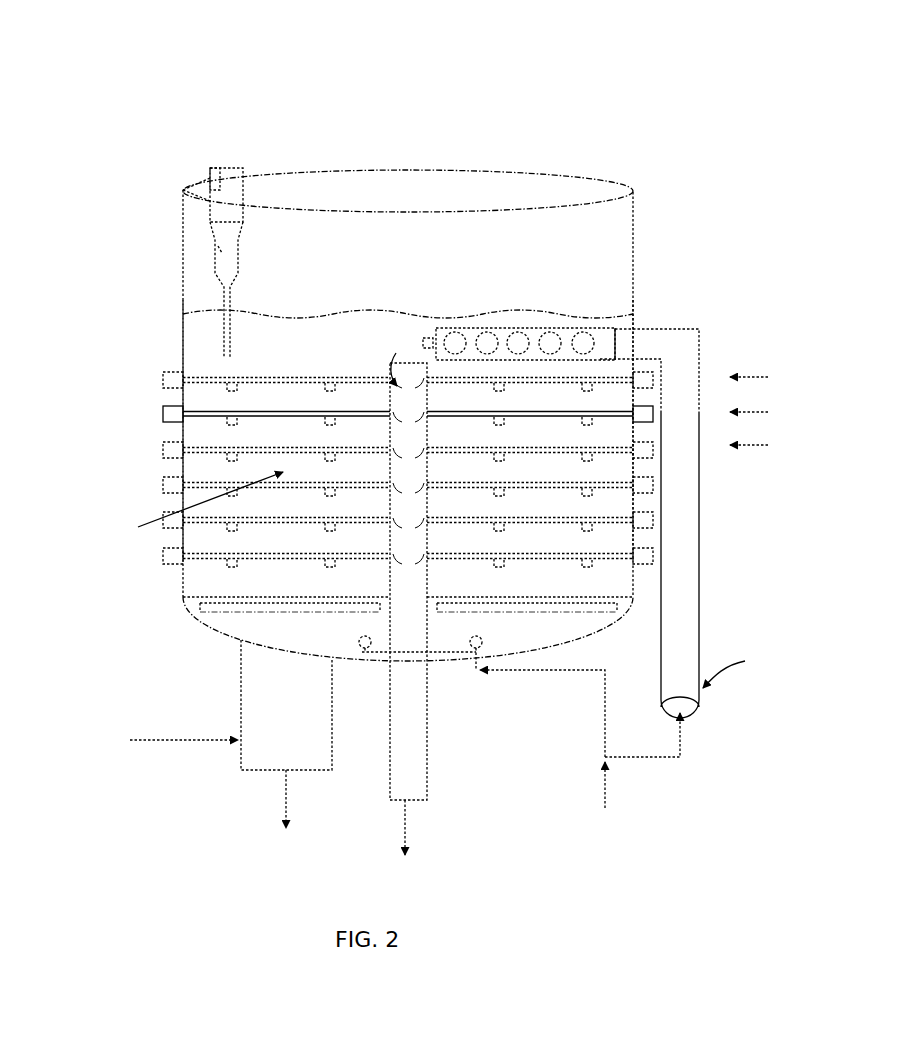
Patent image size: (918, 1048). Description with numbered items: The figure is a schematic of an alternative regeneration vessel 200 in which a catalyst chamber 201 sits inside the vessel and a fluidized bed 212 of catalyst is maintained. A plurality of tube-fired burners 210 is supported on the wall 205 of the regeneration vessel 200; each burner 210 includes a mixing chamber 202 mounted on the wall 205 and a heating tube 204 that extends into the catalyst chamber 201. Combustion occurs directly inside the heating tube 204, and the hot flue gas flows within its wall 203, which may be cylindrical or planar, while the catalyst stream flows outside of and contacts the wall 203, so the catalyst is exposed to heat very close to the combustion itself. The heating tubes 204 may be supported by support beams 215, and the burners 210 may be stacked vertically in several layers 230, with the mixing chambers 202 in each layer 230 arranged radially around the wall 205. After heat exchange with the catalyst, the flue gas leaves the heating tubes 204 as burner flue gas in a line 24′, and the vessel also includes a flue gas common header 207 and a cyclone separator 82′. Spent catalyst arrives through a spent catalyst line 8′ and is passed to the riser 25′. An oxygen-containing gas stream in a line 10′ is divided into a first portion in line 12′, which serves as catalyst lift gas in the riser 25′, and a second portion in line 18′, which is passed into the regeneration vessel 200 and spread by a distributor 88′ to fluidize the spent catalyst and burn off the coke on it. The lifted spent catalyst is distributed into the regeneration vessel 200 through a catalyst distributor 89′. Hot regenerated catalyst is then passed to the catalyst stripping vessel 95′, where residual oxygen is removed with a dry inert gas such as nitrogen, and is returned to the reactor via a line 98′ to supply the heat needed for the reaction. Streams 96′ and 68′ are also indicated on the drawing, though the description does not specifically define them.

The regeneration vessel 200 is at (137, 110).
The cyclone separator 82′ is at (218, 168).
The wall of the regeneration vessel 205 is at (182, 288).
The fluidized bed 212 is at (448, 312).
The catalyst distributor 89′ is at (585, 340).
The burner flue gas line 24′ is at (392, 358).
The tube-fired burner 210 is at (148, 377).
The mixing chamber 202 is at (180, 372).
The heating tube 204 is at (310, 378).
The wall of the heating tube 203 is at (313, 413).
The support beam 215 is at (238, 421).
The catalyst chamber 201 is at (180, 512).
The layer of tube fired burners 230 is at (771, 411).
The riser 25′ is at (702, 545).
The spent catalyst line 8′ is at (731, 668).
The first portion line 12′ is at (683, 755).
The oxygen containing gas line 10′ is at (607, 807).
The second portion line 18′ is at (535, 670).
The distributor 88′ is at (447, 655).
The flue gas common header 207 is at (428, 730).
The bottom outlet 68′ is at (406, 818).
The catalyst stripping vessel 95′ is at (240, 718).
The side inlet 96′ is at (203, 740).
The regenerated catalyst return line 98′ is at (285, 790).